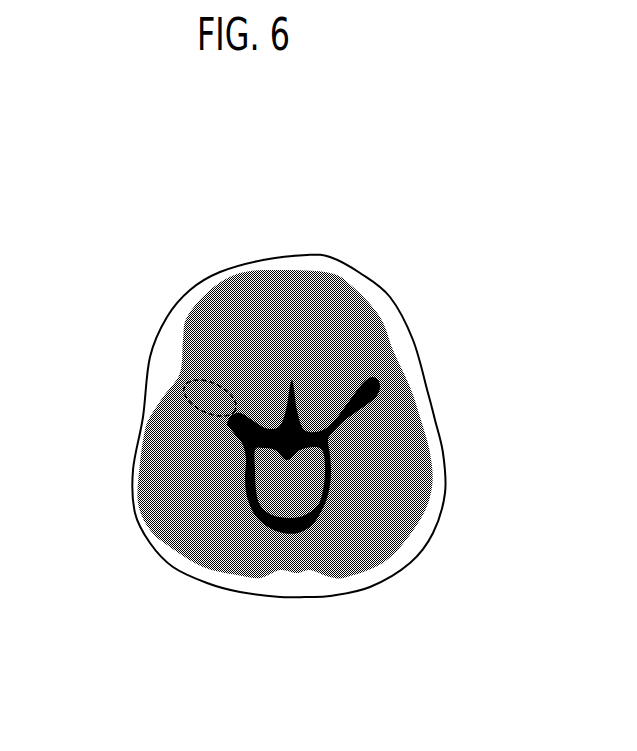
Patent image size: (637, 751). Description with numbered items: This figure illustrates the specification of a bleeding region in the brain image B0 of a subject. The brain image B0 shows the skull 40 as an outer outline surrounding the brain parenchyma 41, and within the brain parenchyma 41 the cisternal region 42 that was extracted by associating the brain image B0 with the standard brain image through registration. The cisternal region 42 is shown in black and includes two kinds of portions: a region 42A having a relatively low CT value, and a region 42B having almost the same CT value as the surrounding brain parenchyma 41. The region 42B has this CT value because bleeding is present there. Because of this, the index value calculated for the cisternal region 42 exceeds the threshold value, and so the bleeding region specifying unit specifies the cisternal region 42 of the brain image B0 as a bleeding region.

The brain image B0 is at (226, 225).
The skull 40 is at (365, 280).
The brain parenchyma 41 is at (298, 283).
The cisternal region 42 is at (378, 380).
The region having a relatively low CT value 42A is at (287, 533).
The region having almost the same CT value as the brain parenchyma 42B is at (183, 373).